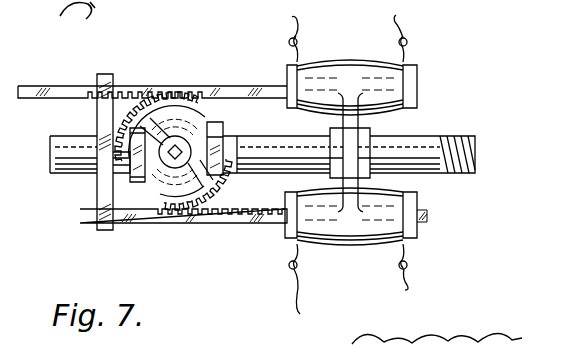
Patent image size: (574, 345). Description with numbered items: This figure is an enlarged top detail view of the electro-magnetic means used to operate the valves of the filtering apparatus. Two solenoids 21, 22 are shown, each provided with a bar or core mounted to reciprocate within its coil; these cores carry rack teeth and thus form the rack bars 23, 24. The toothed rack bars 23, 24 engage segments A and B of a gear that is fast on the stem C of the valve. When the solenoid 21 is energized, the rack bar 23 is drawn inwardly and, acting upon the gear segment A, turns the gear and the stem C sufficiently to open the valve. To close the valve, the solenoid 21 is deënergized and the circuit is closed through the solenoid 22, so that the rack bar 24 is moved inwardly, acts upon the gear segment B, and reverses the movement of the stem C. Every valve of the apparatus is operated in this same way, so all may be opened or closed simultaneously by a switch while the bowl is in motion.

The solenoid 21 is at (352, 71).
The solenoid 22 is at (356, 246).
The rack bar 23 is at (136, 90).
The rack bar 24 is at (139, 223).
The gear segment A is at (197, 107).
The gear segment B is at (190, 218).
The valve stem C is at (180, 147).